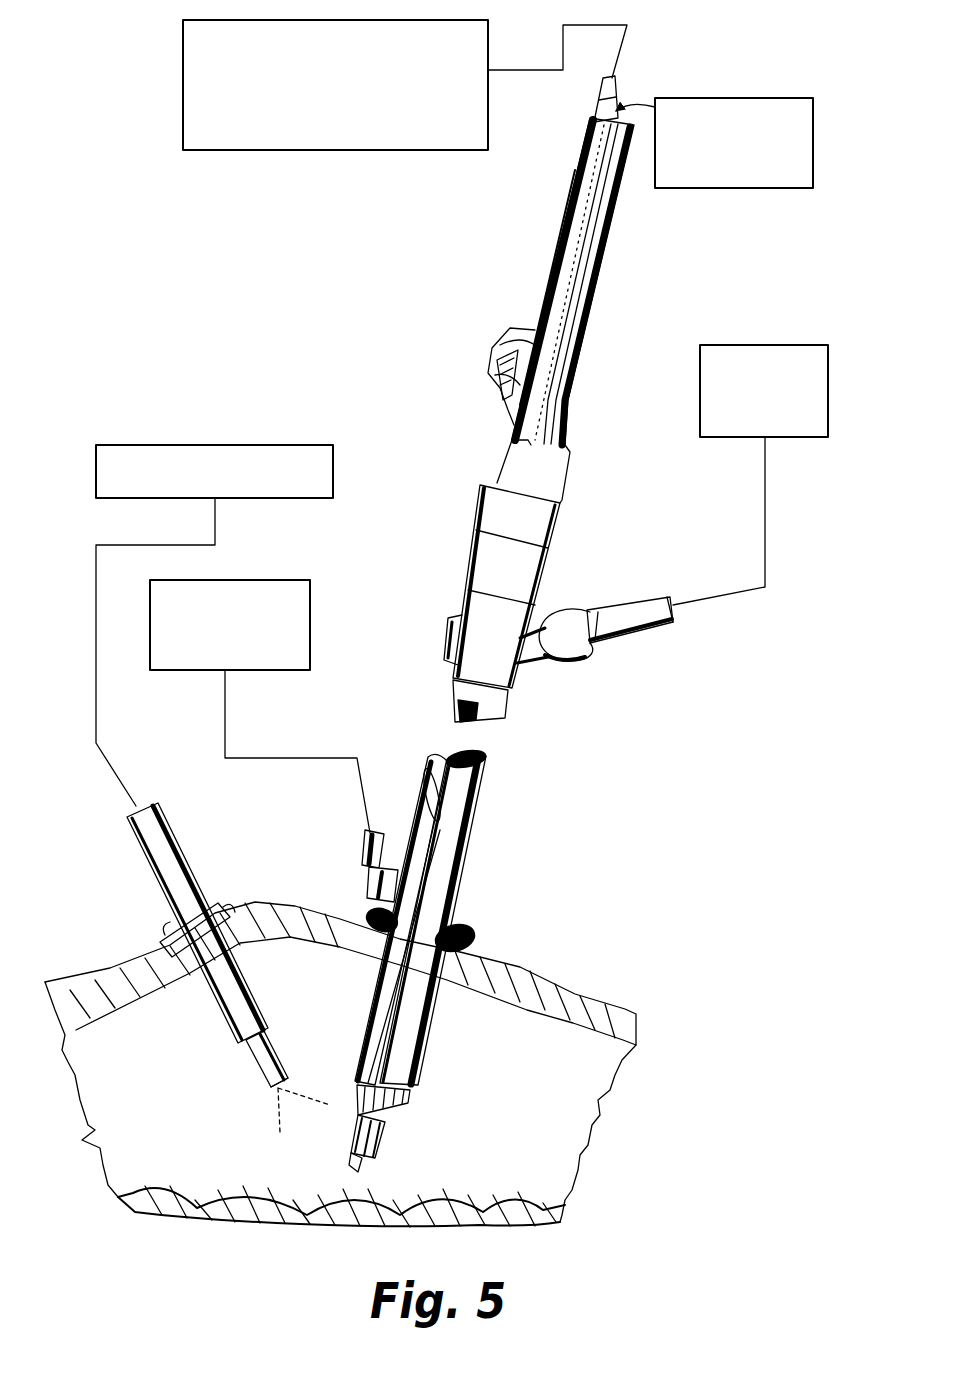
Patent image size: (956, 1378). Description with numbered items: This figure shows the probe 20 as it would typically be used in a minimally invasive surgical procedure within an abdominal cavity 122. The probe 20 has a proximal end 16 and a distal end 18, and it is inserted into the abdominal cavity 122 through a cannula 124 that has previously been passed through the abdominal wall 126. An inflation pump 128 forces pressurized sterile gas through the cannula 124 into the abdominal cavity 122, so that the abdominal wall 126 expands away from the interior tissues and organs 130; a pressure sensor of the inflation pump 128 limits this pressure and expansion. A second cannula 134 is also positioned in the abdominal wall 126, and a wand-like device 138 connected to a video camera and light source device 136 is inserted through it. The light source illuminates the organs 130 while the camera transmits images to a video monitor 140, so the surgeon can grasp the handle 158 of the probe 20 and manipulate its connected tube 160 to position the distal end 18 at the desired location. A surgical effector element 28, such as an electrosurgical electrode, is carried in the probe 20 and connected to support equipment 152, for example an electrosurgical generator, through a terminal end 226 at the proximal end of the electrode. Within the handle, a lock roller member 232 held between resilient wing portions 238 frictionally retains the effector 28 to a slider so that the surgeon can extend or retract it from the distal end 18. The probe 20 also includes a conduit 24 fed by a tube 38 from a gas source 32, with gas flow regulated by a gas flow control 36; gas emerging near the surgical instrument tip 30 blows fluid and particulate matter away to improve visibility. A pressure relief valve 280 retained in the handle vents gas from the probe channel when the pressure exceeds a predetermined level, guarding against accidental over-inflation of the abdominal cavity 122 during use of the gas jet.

The support equipment 152 is at (452, 150).
The terminal end 226 is at (612, 90).
The surgical effector element 28 is at (783, 188).
The proximal end 16 is at (594, 118).
The handle 158 is at (562, 248).
The lock roller member 232 is at (501, 330).
The wing portions 238 is at (500, 385).
The gas source 32 is at (780, 345).
The gas flow control 36 is at (446, 641).
The tube 38 is at (635, 640).
The conduit 24 is at (538, 665).
The connected tube 160 is at (507, 712).
The distal end 18 is at (405, 1105).
The surgical instrument tip 30 is at (358, 1157).
The probe 20 is at (608, 787).
The pressure relief valve 280 is at (432, 777).
The video monitor 140 is at (220, 445).
The inflation pump 128 is at (272, 580).
The wand-like device 138 is at (165, 852).
The second cannula 134 is at (170, 945).
The video camera and light source device 136 is at (292, 1072).
The cannula 124 is at (455, 925).
The abdominal wall 126 is at (535, 968).
The abdominal cavity 122 is at (167, 1085).
The interior tissues and organs 130 is at (167, 1190).